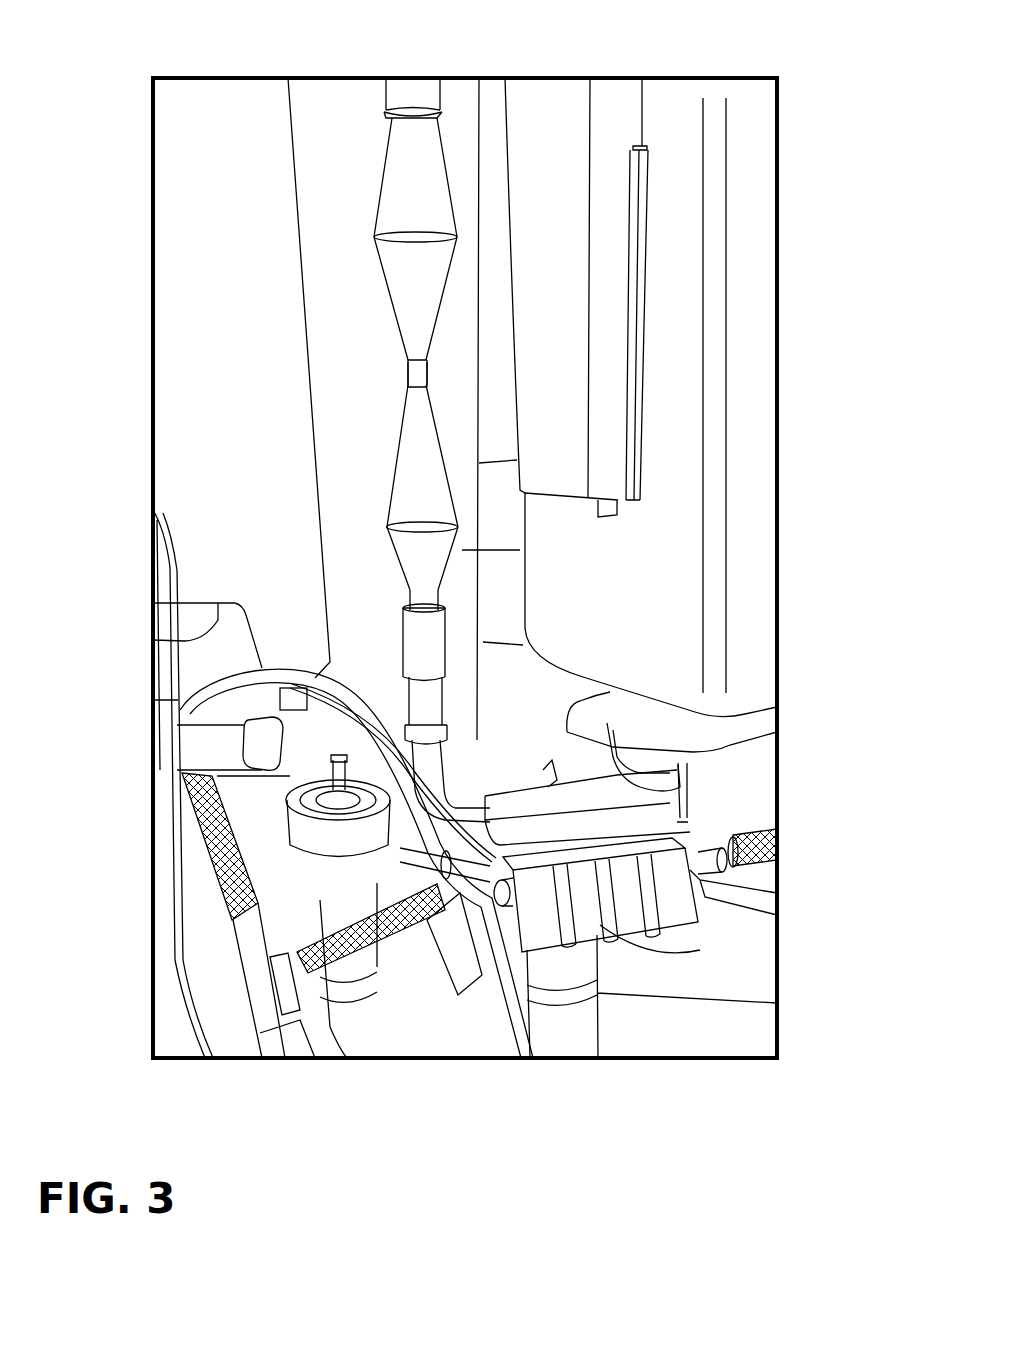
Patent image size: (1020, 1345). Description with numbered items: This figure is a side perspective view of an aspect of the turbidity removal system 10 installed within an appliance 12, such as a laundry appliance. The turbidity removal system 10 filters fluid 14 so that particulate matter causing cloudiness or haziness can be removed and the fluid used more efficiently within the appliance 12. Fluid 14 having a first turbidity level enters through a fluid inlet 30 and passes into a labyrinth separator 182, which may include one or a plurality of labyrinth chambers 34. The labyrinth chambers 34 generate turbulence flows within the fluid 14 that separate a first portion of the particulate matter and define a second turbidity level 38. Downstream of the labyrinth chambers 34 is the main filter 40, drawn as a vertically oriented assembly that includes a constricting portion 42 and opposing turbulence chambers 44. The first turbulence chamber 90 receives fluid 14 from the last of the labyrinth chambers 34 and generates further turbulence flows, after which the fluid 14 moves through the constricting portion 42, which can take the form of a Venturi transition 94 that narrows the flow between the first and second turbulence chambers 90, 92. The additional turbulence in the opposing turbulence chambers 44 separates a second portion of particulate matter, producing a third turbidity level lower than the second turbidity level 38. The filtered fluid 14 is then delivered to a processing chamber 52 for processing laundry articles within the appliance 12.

The turbidity removal system 10 is at (488, 762).
The appliance 12 is at (782, 221).
The fluid 14 is at (783, 846).
The fluid inlet 30 is at (712, 884).
The labyrinth chambers 34 is at (640, 937).
The second turbidity level 38 is at (458, 917).
The main filter 40 is at (390, 390).
The constricting portion 42 is at (408, 373).
The opposing turbulence chambers 44 is at (388, 215).
The processing chamber 52 is at (740, 418).
The first turbulence chamber 90 is at (428, 547).
The second turbulence chamber 92 is at (437, 213).
The Venturi transition 94 is at (433, 373).
The labyrinth separator 182 is at (687, 832).